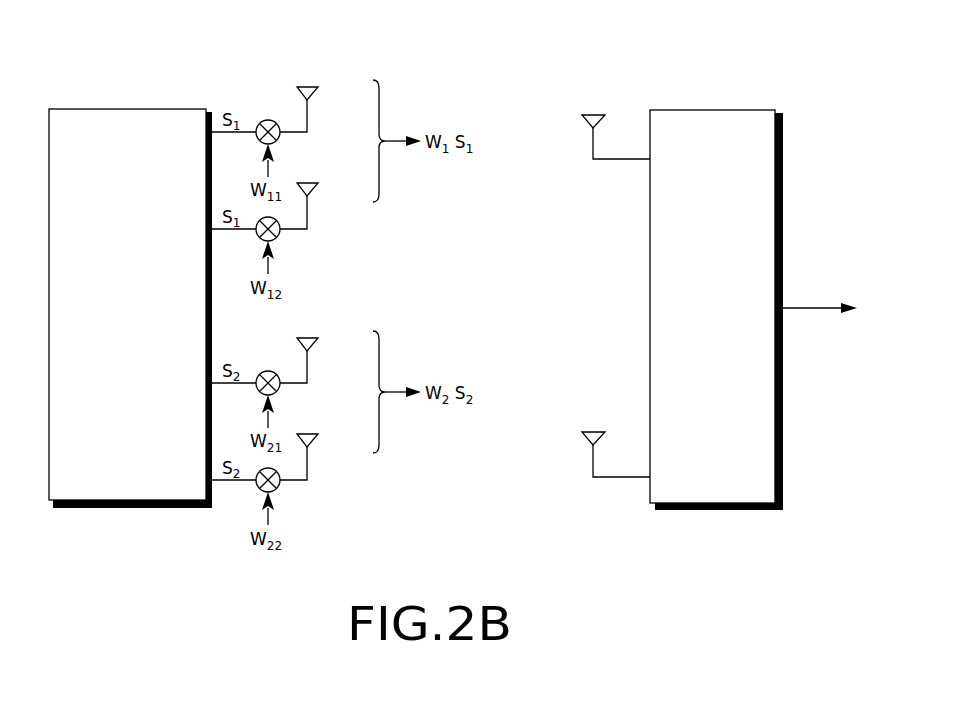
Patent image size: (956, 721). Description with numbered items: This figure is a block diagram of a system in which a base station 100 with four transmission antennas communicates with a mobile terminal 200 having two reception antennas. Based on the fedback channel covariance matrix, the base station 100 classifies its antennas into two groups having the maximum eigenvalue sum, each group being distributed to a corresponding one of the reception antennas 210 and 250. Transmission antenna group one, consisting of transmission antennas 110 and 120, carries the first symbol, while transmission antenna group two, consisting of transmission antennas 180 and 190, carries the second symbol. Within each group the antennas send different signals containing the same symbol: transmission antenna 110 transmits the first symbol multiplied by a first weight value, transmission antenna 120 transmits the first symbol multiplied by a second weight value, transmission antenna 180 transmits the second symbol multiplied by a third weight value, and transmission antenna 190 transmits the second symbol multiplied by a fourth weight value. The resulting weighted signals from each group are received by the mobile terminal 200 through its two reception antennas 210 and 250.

The base station 100 is at (127, 108).
The transmission antenna 110 is at (320, 95).
The transmission antenna 120 is at (320, 191).
The transmission antenna 180 is at (320, 346).
The transmission antenna 190 is at (320, 442).
The mobile terminal 200 is at (712, 109).
The reception antenna 210 is at (580, 123).
The reception antenna 250 is at (580, 440).